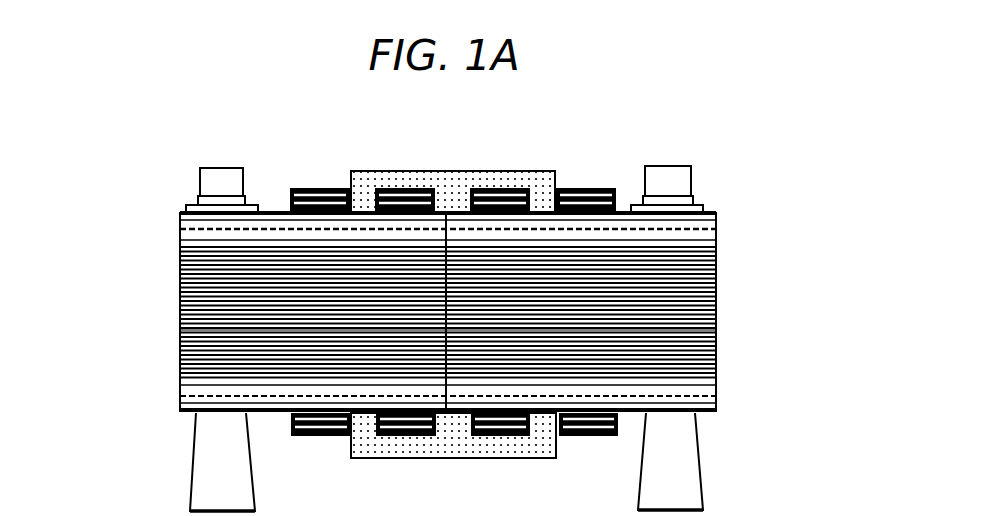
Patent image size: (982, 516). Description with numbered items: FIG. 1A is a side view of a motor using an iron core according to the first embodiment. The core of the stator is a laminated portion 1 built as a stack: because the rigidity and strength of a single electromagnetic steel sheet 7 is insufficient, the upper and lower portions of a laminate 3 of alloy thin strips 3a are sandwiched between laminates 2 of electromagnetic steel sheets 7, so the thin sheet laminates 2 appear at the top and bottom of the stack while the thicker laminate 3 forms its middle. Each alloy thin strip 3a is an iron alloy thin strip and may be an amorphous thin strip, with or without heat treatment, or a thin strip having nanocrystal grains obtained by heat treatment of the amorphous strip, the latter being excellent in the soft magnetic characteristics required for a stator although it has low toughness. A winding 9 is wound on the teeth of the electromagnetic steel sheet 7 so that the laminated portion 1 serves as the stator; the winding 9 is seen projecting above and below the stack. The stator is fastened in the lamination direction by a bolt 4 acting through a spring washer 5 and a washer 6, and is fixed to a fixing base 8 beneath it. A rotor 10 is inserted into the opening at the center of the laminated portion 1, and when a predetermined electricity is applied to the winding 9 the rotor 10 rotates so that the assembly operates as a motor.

The laminated portion 1 is at (167, 205).
The laminate of electromagnetic steel sheets 2 is at (727, 207).
The laminate of alloy thin strips 3 is at (727, 247).
The alloy thin strip 3a is at (193, 322).
The bolt 4 is at (685, 163).
The spring washer 5 is at (685, 188).
The washer 6 is at (700, 202).
The electromagnetic steel sheet 7 is at (180, 220).
The fixing base 8 is at (680, 444).
The winding 9 is at (305, 178).
The rotor 10 is at (452, 163).